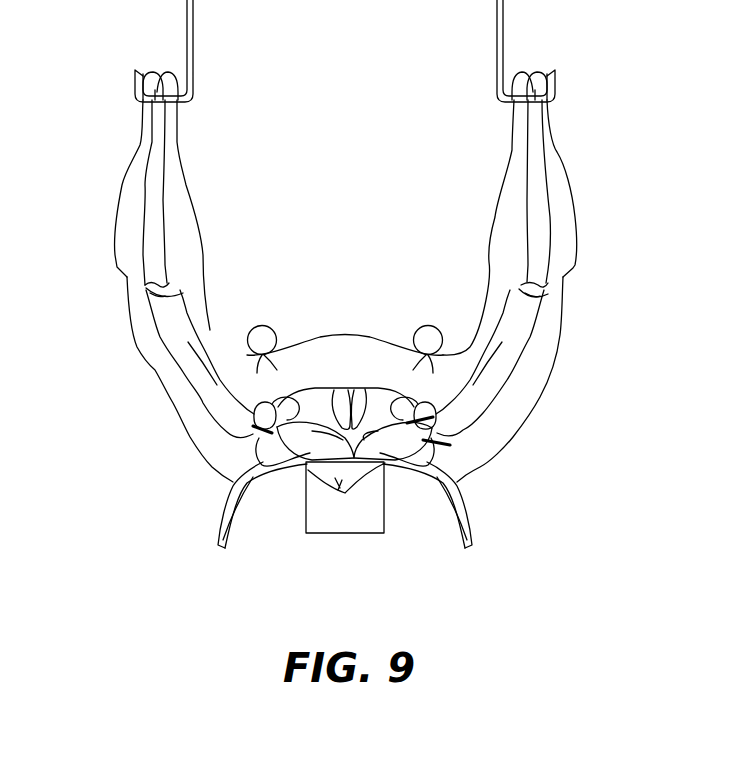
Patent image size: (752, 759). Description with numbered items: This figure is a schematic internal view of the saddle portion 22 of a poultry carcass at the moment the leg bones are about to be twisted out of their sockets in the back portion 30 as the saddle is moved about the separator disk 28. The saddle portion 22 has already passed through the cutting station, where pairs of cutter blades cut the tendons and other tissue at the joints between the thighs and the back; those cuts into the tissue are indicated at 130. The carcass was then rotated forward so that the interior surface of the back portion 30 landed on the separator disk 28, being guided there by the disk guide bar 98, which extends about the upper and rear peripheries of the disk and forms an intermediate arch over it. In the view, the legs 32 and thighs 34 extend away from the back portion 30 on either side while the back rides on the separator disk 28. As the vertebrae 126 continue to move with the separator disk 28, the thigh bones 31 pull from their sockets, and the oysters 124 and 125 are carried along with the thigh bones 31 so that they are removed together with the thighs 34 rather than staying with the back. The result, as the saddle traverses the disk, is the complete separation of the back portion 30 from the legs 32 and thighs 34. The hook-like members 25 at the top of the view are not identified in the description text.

The saddle portion 22 is at (604, 292).
The hooks 25 is at (190, 42).
The separator disk 28 is at (315, 512).
The back portion 30 is at (375, 333).
The thigh bones 31 is at (207, 385).
The legs 32 is at (115, 208).
The thighs 34 is at (163, 376).
The disk guide bar 98 is at (258, 337).
The oyster 124 is at (328, 450).
The oyster 125 is at (378, 445).
The vertebrae 126 is at (350, 470).
The cuts 130 is at (453, 445).